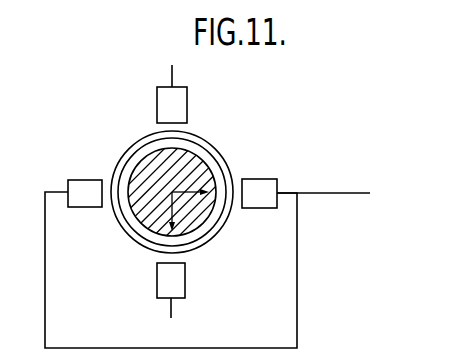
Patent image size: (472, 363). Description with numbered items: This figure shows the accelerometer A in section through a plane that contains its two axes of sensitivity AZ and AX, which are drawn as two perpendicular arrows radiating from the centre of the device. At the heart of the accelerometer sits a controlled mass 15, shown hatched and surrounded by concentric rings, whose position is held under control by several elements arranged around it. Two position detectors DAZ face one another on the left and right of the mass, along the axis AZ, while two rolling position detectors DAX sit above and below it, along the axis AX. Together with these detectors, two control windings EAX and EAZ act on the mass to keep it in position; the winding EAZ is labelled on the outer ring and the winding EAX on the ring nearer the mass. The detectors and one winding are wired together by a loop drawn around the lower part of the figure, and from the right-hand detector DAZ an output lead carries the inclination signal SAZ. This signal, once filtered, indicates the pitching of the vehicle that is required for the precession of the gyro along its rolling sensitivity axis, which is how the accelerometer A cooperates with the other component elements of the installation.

The controlled mass 15 is at (142, 218).
The accelerometer A is at (214, 152).
The axis of sensitivity AZ is at (203, 196).
The axis of sensitivity AX is at (169, 226).
The rolling position detector DAX is at (180, 105).
The position detector DAZ is at (285, 176).
The inclination signal SAZ is at (324, 176).
The control winding EAZ is at (150, 137).
The control winding EAX is at (128, 162).